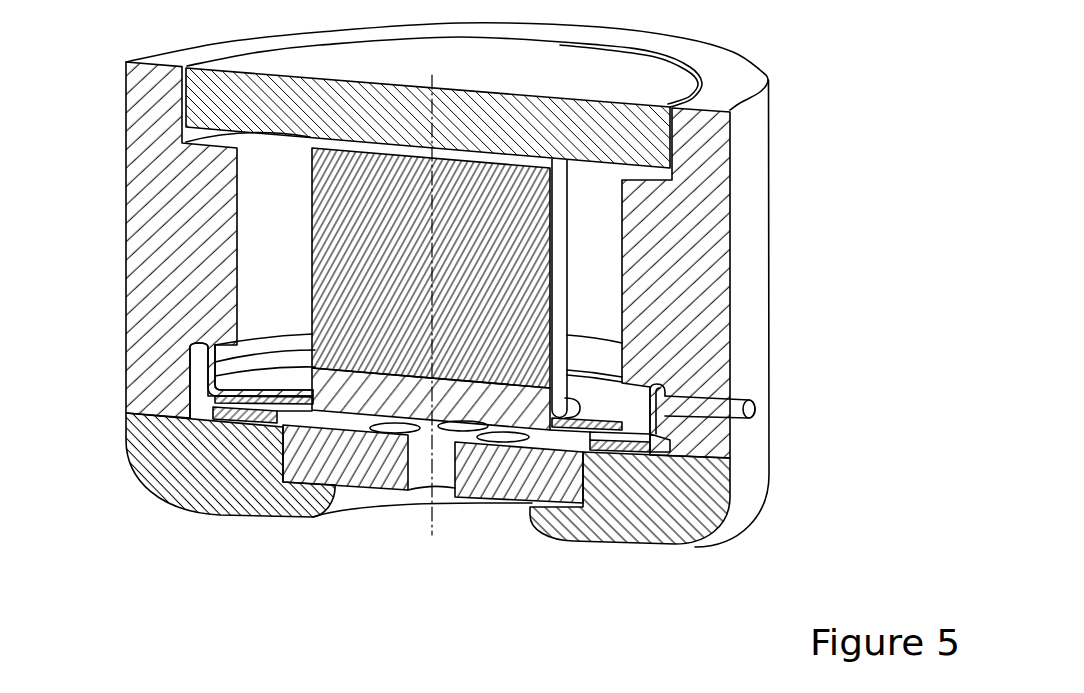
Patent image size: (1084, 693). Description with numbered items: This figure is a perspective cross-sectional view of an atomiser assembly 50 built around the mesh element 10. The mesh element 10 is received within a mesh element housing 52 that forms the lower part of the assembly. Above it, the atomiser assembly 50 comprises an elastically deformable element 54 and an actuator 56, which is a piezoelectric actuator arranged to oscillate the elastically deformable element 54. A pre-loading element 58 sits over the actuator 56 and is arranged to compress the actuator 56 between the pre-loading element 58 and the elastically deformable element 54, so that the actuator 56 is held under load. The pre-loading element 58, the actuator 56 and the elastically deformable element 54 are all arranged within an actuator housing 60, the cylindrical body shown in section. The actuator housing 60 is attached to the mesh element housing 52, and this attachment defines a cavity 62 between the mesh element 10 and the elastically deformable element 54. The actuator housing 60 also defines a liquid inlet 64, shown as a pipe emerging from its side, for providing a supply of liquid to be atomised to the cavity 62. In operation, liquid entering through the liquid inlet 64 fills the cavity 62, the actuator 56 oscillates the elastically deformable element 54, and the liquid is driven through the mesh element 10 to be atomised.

The mesh element 10 is at (370, 477).
The atomiser assembly 50 is at (845, 122).
The mesh element housing 52 is at (170, 472).
The elastically deformable element 54 is at (282, 388).
The actuator 56 is at (353, 207).
The pre-loading element 58 is at (247, 82).
The actuator housing 60 is at (142, 110).
The cavity 62 is at (190, 410).
The liquid inlet 64 is at (757, 410).